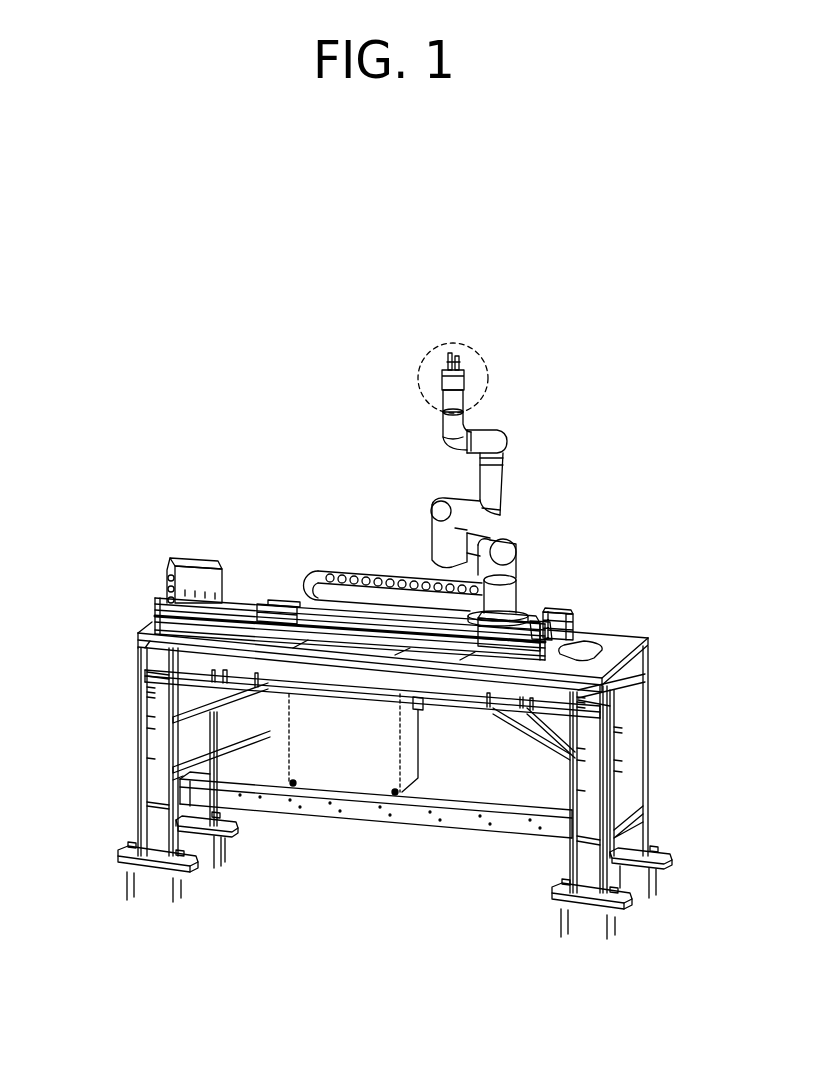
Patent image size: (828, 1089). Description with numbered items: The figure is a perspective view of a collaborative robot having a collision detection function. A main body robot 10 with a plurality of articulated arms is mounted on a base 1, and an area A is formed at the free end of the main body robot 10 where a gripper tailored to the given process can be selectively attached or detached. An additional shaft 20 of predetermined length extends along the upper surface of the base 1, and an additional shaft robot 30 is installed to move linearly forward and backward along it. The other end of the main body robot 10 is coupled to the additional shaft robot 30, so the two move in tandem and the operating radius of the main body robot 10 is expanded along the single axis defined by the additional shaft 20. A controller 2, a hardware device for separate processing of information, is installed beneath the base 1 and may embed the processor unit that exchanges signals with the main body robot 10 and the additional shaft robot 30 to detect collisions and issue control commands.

The base 1 is at (627, 642).
The controller 2 is at (333, 768).
The main body robot 10 is at (495, 481).
The additional shaft 20 is at (155, 606).
The additional shaft robot 30 is at (533, 627).
The area A is at (486, 368).